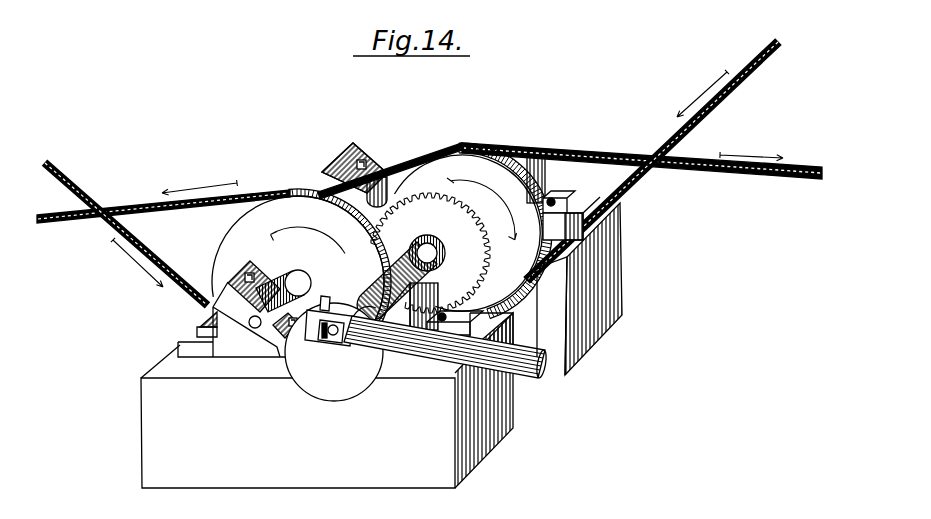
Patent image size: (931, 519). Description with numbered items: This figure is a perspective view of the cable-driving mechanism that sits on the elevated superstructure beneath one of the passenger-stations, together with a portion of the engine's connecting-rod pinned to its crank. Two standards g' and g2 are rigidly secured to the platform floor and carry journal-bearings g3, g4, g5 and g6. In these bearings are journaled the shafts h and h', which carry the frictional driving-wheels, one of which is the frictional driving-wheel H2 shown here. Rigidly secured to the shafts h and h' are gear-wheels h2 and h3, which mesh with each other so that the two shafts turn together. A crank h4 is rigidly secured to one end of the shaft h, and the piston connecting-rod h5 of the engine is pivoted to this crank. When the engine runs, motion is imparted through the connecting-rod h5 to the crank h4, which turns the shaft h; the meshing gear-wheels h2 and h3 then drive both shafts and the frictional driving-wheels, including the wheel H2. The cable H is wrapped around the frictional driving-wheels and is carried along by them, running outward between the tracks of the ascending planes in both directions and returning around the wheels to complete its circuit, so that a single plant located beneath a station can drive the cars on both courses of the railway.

The cable H is at (740, 171).
The frictional driving-wheel H2 is at (382, 240).
The shaft h' is at (244, 305).
The gear-wheel h3 is at (323, 187).
The journal-bearing g4 is at (357, 147).
The gear-wheel h2 is at (430, 253).
The shaft h is at (392, 318).
The journal-bearing g6 is at (548, 177).
The standard g2 is at (579, 289).
The journal-bearing g3 is at (435, 296).
The journal-bearing g5 is at (243, 325).
The crank h4 is at (334, 348).
The standard g' is at (327, 400).
The piston connecting-rod h5 is at (528, 382).